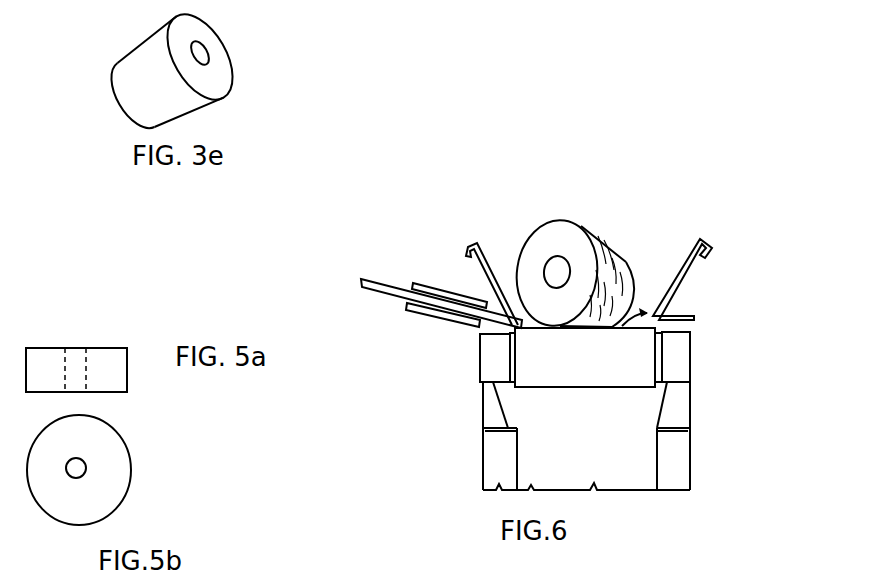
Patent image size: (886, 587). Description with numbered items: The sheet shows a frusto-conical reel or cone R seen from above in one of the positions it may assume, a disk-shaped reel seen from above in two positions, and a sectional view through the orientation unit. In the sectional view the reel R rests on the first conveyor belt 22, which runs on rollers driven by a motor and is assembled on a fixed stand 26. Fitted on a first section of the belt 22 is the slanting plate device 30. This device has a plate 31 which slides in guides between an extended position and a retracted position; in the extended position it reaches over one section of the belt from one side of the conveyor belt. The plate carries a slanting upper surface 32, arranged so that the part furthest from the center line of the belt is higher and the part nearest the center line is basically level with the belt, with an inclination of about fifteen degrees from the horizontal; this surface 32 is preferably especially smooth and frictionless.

In FIG. 3E, the roll R is at (143, 70).
In FIG. 6, the roll R is at (565, 235).
In FIG. 6, the slanting plate device 30 is at (423, 240).
In FIG. 6, the plate 31 is at (387, 285).
In FIG. 6, the slanting upper surface 32 is at (497, 307).
In FIG. 6, the first conveyor belt 22 is at (648, 397).
In FIG. 6, the fixed stand 26 is at (673, 452).